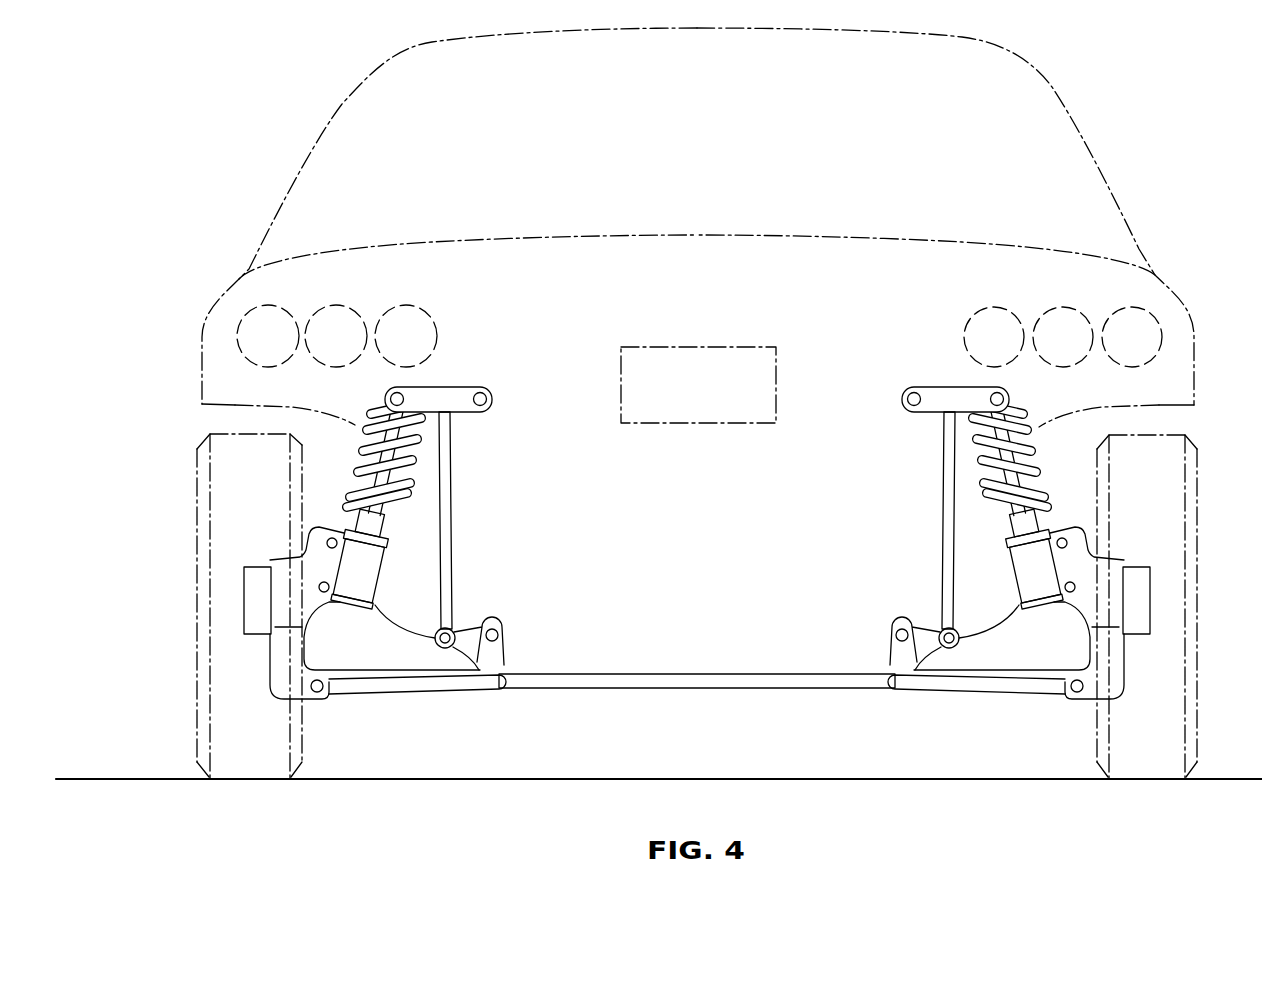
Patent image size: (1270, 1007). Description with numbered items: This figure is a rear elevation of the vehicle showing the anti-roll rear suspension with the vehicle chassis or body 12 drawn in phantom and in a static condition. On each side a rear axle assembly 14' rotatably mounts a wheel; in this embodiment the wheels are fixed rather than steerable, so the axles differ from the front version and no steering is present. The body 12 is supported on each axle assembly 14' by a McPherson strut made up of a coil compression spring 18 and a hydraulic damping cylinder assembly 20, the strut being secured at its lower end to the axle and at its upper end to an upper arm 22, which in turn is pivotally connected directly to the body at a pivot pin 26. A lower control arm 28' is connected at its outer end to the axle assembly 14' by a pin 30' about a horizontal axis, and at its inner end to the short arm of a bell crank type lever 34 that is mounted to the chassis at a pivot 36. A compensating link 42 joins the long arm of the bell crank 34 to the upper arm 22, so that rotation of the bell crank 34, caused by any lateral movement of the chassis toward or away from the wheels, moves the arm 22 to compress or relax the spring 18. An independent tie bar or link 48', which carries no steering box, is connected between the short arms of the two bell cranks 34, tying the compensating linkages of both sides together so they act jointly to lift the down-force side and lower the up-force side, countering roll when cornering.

The vehicle chassis or body 12 is at (350, 107).
The axle assembly 14' is at (696, 606).
The coil compression spring 18 is at (405, 462).
The hydraulic damping cylinder assembly 20 is at (383, 528).
The upper arm 22 is at (452, 385).
The pivot pin 26 is at (487, 395).
The lower control arm 28' is at (697, 716).
The pin 30' is at (697, 722).
The bell crank type lever 34 is at (493, 616).
The pivot 36 is at (497, 634).
The compensating link 42 is at (449, 500).
The tie bar or link 48' is at (697, 708).